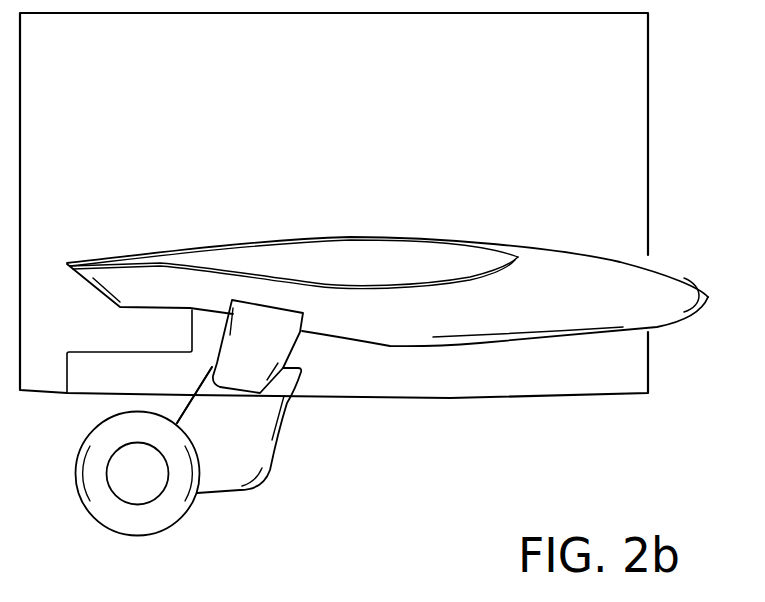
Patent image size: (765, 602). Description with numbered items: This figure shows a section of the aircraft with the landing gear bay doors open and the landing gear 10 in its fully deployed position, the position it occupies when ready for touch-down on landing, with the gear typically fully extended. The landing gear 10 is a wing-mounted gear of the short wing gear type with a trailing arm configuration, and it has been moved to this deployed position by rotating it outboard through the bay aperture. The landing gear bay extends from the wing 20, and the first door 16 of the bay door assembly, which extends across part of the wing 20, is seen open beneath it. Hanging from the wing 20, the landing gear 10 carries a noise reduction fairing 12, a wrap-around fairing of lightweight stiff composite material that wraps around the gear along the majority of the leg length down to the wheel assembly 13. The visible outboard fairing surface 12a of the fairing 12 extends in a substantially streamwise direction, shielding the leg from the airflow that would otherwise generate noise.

The landing gear 10 is at (310, 440).
The noise reduction fairing 12 is at (247, 467).
The outboard fairing surface 12a is at (253, 435).
The wheel assembly 13 is at (177, 507).
The first door 16 is at (288, 342).
The wing 20 is at (583, 267).